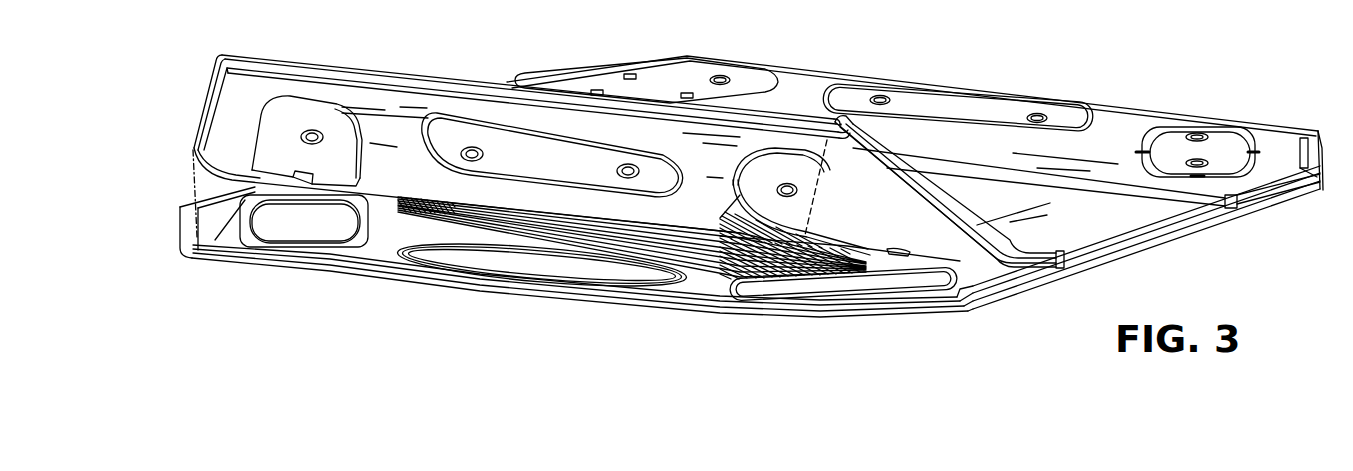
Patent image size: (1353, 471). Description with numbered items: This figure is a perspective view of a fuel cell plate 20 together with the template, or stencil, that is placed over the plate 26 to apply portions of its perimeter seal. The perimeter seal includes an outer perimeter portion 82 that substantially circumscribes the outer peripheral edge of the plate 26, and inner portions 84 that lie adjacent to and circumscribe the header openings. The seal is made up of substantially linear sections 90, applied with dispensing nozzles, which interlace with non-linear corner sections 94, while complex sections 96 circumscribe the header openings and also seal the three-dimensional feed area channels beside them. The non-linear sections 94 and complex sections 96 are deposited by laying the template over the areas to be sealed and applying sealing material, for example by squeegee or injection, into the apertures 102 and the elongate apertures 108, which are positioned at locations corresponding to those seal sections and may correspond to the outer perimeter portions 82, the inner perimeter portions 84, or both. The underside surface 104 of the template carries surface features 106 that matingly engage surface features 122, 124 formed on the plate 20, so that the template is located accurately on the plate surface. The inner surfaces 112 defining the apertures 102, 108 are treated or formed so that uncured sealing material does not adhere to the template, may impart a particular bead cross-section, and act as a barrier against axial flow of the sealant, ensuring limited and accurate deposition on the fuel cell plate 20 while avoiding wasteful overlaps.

The fuel cell plate 20 is at (432, 340).
The plate 26 is at (475, 284).
The outer perimeter portion 82 is at (640, 305).
The inner portions 84 is at (616, 288).
The linear section 90 is at (1140, 238).
The non-linear sections 94 is at (700, 308).
The complex sections 96 is at (325, 248).
The apertures 102 is at (483, 95).
The underside surface 104 is at (220, 143).
The surface features 106 is at (727, 217).
The elongate apertures 108 is at (273, 78).
The inner surfaces 112 is at (257, 127).
The surface features 122 is at (812, 255).
The surface features 124 is at (870, 262).